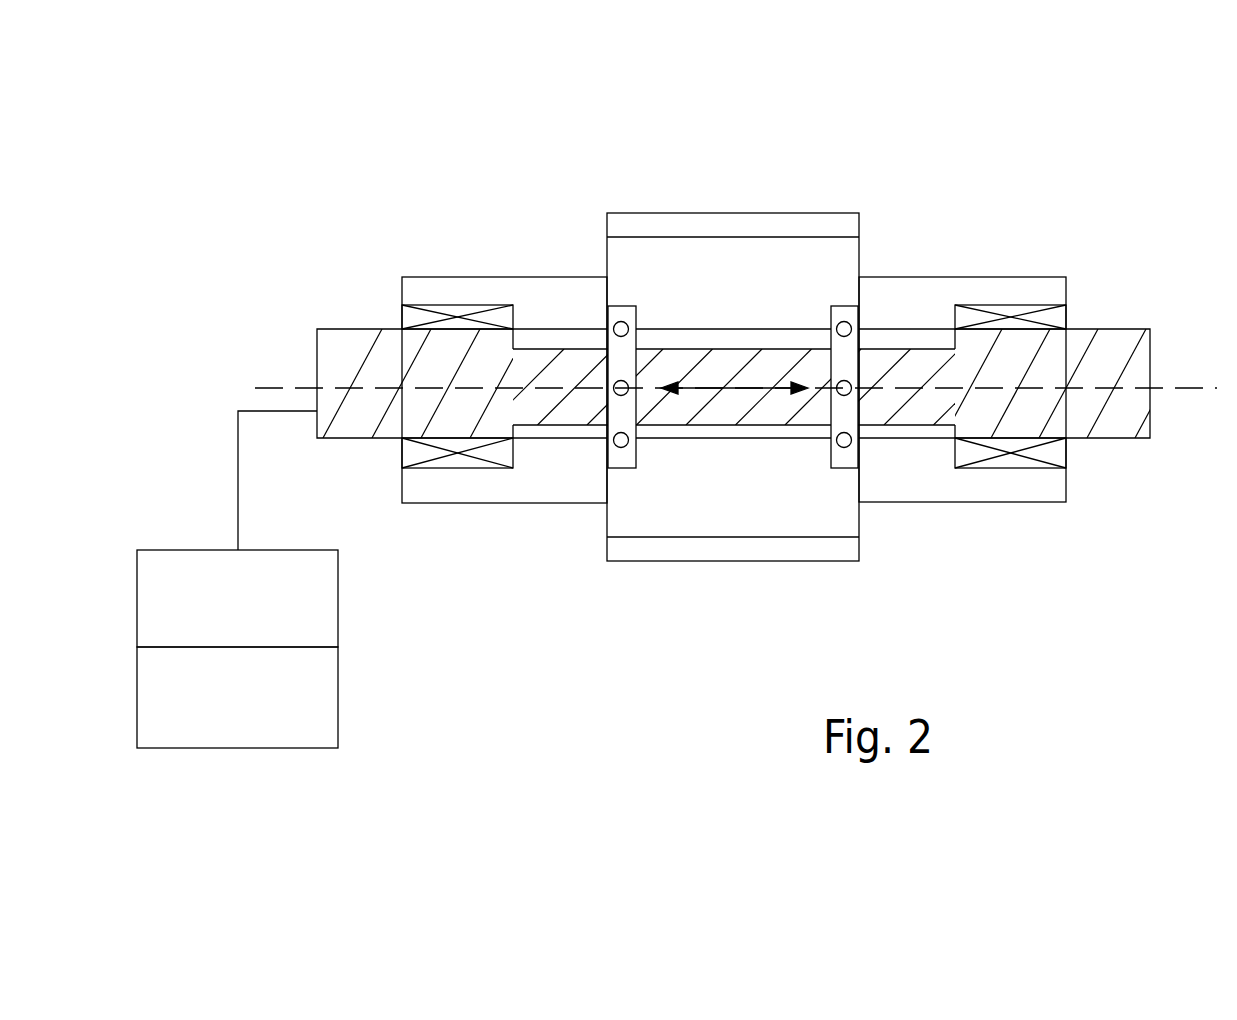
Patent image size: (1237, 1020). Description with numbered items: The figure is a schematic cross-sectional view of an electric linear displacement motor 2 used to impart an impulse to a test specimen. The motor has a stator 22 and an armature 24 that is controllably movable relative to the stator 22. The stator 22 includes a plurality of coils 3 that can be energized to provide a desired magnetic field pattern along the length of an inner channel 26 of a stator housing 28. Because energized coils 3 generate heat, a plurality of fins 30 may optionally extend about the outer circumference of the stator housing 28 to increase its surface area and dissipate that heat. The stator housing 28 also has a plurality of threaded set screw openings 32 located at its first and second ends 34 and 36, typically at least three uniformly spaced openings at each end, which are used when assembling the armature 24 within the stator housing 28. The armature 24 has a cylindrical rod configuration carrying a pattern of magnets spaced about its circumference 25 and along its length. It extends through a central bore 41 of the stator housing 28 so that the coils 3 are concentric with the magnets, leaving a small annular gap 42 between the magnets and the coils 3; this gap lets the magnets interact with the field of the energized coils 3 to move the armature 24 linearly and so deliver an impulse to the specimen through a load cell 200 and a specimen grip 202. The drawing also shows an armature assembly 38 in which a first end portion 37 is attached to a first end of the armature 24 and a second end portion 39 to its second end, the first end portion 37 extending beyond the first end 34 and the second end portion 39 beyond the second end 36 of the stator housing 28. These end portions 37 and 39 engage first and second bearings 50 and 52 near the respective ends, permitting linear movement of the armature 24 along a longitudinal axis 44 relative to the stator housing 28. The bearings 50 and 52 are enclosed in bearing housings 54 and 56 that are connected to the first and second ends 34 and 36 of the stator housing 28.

The electric linear displacement motor 2 is at (670, 262).
The coils 3 is at (768, 250).
The stator 22 is at (720, 235).
The armature 24 is at (900, 365).
The circumference 25 is at (527, 428).
The inner channel 26 is at (797, 330).
The stator housing 28 is at (714, 540).
The fins 30 is at (797, 549).
The threaded set screw openings 32 is at (604, 393).
The first end 34 is at (860, 257).
The second end 36 is at (607, 262).
The first end portion 37 is at (1083, 365).
The armature assembly 38 is at (1113, 325).
The second end portion 39 is at (368, 418).
The central bore 41 is at (841, 563).
The annular gap 42 is at (680, 425).
The longitudinal axis 44 is at (1190, 388).
The first bearing 50 is at (1047, 317).
The second bearing 52 is at (460, 317).
The bearing housing 54 is at (994, 290).
The bearing housing 56 is at (568, 306).
The load cell 200 is at (338, 588).
The specimen grip 202 is at (275, 748).